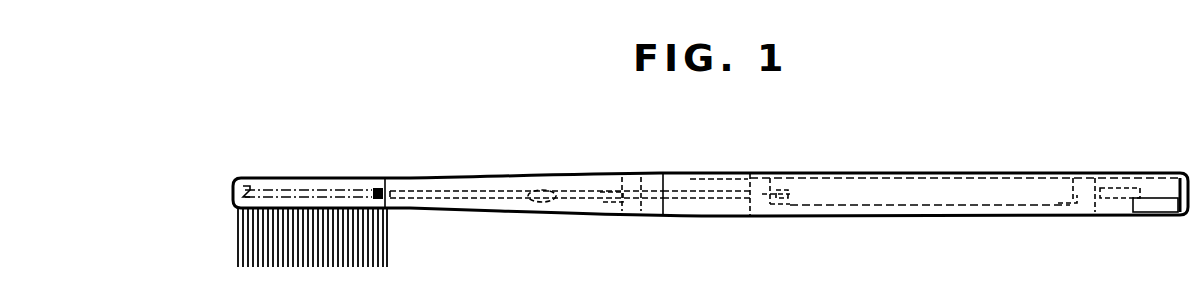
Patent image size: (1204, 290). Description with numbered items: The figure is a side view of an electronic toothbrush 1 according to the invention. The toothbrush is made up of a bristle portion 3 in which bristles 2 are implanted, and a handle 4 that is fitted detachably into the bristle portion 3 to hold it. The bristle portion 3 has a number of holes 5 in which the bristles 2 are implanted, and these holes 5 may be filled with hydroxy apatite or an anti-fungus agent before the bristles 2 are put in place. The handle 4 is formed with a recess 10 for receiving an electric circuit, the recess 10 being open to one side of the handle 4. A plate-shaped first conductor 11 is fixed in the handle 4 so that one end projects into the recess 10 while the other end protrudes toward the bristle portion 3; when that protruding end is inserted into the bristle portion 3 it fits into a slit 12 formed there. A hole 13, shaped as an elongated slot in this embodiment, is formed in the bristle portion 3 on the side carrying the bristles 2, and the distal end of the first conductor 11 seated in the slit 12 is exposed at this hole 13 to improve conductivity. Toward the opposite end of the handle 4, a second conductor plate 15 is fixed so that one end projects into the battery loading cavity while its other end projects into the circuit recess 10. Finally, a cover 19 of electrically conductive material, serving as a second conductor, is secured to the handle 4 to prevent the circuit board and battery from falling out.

The electronic toothbrush 1 is at (875, 160).
The bristles 2 is at (237, 248).
The bristle portion 3 is at (345, 178).
The handle 4 is at (887, 217).
The holes 5 is at (243, 188).
The recess 10 is at (967, 178).
The first conductor 11 is at (600, 192).
The slit 12 is at (548, 200).
The hole 13 is at (421, 204).
The second conductor plate 15 is at (1108, 213).
The cover 19 is at (1154, 173).